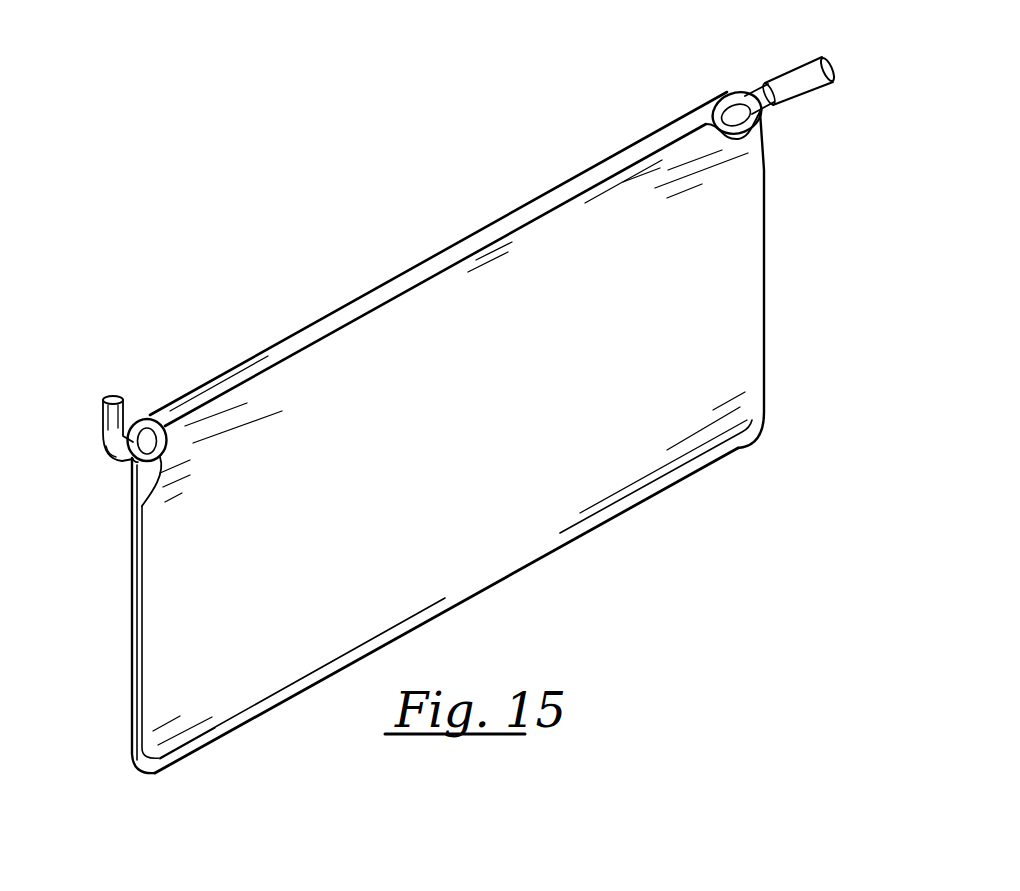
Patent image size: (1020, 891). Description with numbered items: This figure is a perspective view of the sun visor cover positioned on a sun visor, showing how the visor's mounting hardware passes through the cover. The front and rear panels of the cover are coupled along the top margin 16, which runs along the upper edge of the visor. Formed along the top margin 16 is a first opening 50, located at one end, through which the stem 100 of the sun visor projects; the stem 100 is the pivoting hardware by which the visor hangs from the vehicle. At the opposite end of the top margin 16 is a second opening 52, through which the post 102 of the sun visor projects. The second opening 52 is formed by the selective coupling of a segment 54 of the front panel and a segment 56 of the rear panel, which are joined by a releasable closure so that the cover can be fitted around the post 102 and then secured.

The top margin 16 is at (422, 260).
The first opening 50 is at (736, 98).
The second opening 52 is at (136, 424).
The segment of the front panel 54 is at (137, 507).
The segment of the rear panel 56 is at (130, 459).
The stem 100 is at (821, 52).
The post 102 is at (101, 431).